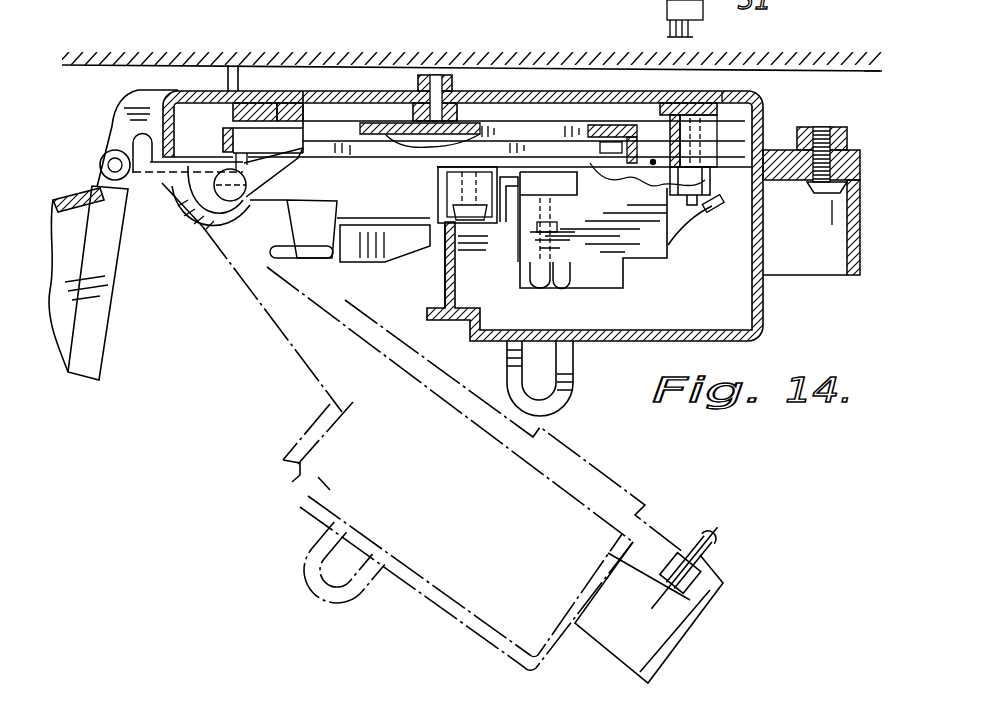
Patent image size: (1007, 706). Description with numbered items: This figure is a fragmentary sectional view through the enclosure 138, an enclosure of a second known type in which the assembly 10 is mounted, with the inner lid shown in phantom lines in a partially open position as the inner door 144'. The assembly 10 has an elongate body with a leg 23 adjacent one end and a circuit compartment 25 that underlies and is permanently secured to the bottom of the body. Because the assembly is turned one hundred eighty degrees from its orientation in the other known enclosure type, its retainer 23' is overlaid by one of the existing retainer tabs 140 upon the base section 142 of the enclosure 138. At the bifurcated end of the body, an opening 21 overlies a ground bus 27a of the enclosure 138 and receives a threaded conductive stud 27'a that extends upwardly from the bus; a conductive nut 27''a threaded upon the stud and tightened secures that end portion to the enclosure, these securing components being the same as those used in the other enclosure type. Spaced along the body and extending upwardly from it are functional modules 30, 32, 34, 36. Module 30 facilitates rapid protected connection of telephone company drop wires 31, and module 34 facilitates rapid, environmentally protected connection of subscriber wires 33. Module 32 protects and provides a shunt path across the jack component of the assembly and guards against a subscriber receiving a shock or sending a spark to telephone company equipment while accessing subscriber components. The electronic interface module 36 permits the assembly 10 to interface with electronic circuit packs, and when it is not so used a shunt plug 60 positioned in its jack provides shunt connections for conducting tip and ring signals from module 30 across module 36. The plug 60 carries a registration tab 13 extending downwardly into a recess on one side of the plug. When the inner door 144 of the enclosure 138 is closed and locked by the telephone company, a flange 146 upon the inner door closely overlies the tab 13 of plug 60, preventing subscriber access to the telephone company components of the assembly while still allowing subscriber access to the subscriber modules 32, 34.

The assembly 10 is at (268, 288).
The registration tab 13 is at (436, 202).
The opening 21 is at (700, 118).
The leg 23 is at (329, 88).
The retainer 23' is at (247, 106).
The circuit compartment 25 is at (552, 128).
The ground bus 27a is at (722, 92).
The threaded conductive stud 27'a is at (744, 124).
The conductive nut 27''a is at (806, 201).
The functional module 30 is at (650, 262).
The telephone company drop wires 31 is at (702, 212).
The functional module 32 is at (313, 282).
The subscriber wires 33 is at (140, 226).
The functional module 34 is at (272, 224).
The electronic interface module 36 is at (506, 225).
The shunt plug 60 is at (473, 224).
The enclosure 138 is at (76, 196).
The retainer tab 140 is at (226, 88).
The base section 142 is at (447, 92).
The inner door 144 is at (500, 253).
The housing in tilted position 144' is at (445, 433).
The flange 146 is at (442, 262).